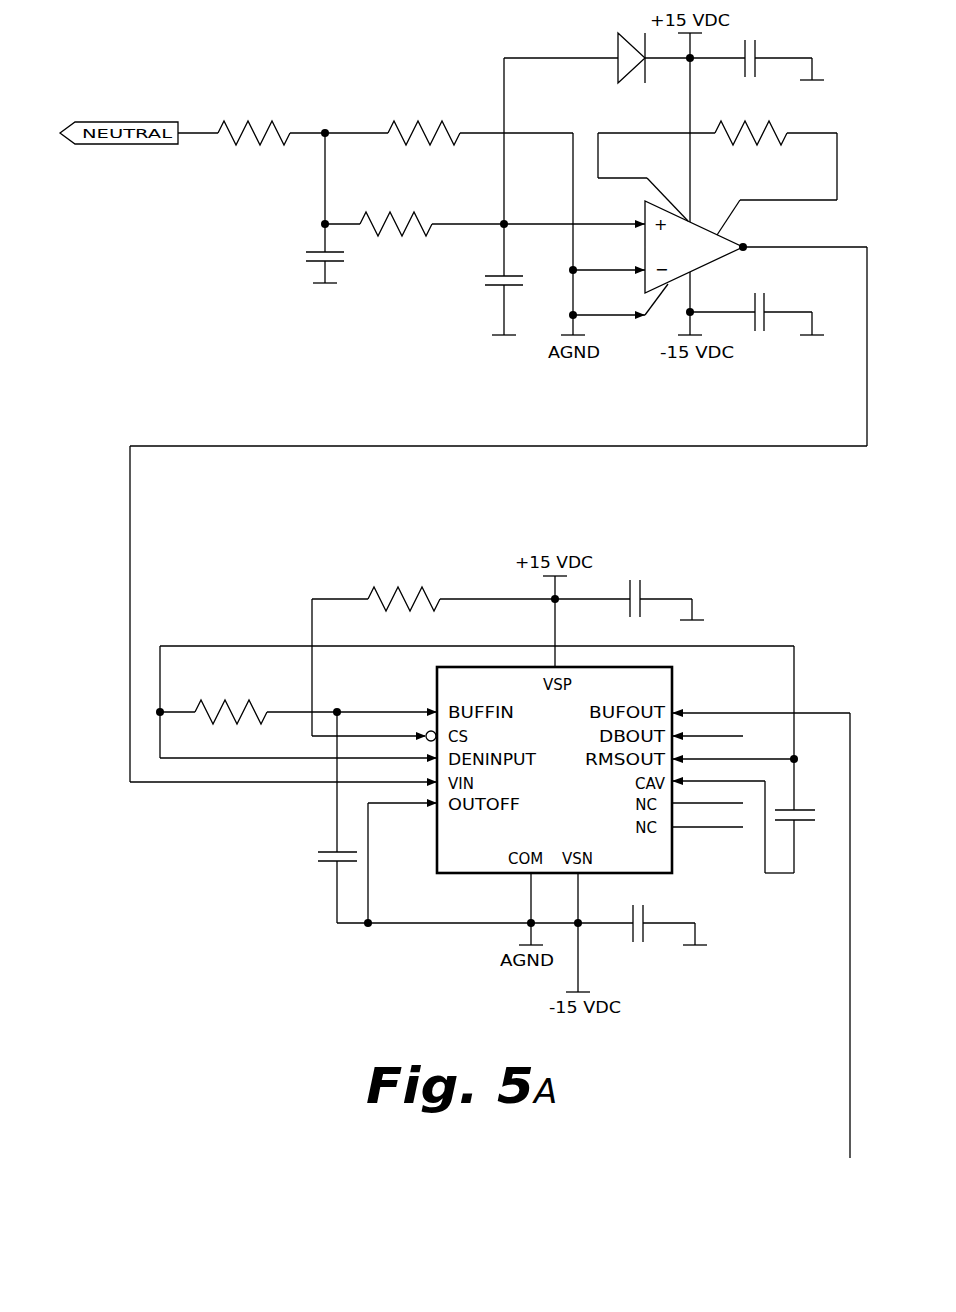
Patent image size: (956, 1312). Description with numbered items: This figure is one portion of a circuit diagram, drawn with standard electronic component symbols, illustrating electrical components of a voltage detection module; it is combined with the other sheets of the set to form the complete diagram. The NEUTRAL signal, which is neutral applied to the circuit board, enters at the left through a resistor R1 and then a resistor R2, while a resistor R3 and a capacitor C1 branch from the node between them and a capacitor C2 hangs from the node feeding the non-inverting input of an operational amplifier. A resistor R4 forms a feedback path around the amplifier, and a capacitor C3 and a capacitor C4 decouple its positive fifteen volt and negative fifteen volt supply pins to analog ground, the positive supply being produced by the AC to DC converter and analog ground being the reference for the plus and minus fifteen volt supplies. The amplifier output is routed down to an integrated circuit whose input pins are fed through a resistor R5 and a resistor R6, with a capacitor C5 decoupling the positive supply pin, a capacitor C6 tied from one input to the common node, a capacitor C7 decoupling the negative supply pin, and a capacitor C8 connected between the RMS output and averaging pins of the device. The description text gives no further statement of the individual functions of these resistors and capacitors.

The resistor R1 95K R1 is at (254, 132).
The resistor R2 5K R2 is at (424, 132).
The resistor R3 60.4K R3 is at (409, 211).
The feedback resistor R4 100K R4 is at (717, 178).
The resistor R5 86.6K R5 is at (298, 714).
The resistor R6 5.11K R6 is at (471, 647).
The capacitor C1 0.025 uF C1 is at (289, 261).
The capacitor C2 0.001 uF C2 is at (470, 210).
The capacitor C3 0.1 uF C3 is at (775, 58).
The capacitor C4 0.1 uF C4 is at (764, 317).
The capacitor C5 0.1 uF C5 is at (658, 602).
The capacitor C6 1 uF C6 is at (311, 817).
The capacitor C7 0.1 uF C7 is at (658, 927).
The capacitor C8 1 uF C8 is at (802, 759).